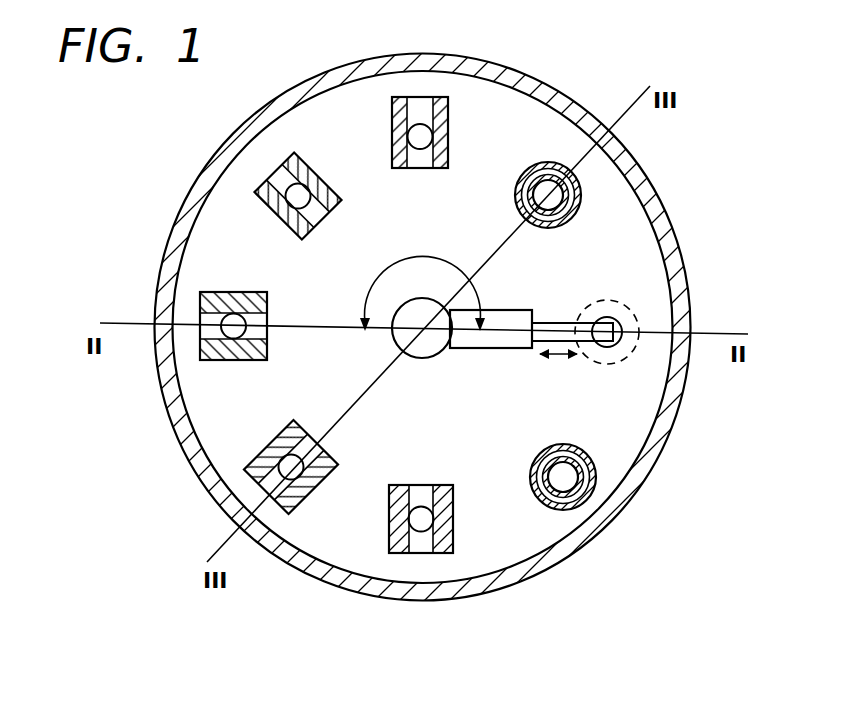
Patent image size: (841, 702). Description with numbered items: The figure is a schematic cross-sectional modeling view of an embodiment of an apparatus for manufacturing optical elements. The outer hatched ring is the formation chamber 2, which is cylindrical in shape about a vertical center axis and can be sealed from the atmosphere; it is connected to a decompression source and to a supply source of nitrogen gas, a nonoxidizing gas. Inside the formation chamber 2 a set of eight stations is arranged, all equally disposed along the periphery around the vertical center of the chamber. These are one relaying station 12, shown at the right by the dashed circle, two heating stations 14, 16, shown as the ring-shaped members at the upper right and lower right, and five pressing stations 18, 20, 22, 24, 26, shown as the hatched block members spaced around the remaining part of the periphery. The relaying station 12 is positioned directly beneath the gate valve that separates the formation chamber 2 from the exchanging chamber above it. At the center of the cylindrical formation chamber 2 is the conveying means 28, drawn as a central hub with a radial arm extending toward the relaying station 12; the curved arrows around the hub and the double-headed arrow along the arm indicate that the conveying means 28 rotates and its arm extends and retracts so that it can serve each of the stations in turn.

The formation chamber 2 is at (298, 573).
The relaying station 12 is at (632, 356).
The heating station 14 is at (547, 152).
The heating station 16 is at (553, 521).
The pressing station 18 is at (257, 190).
The pressing station 20 is at (200, 296).
The pressing station 22 is at (245, 470).
The pressing station 24 is at (392, 553).
The pressing station 26 is at (420, 128).
The conveying means 28 is at (384, 346).